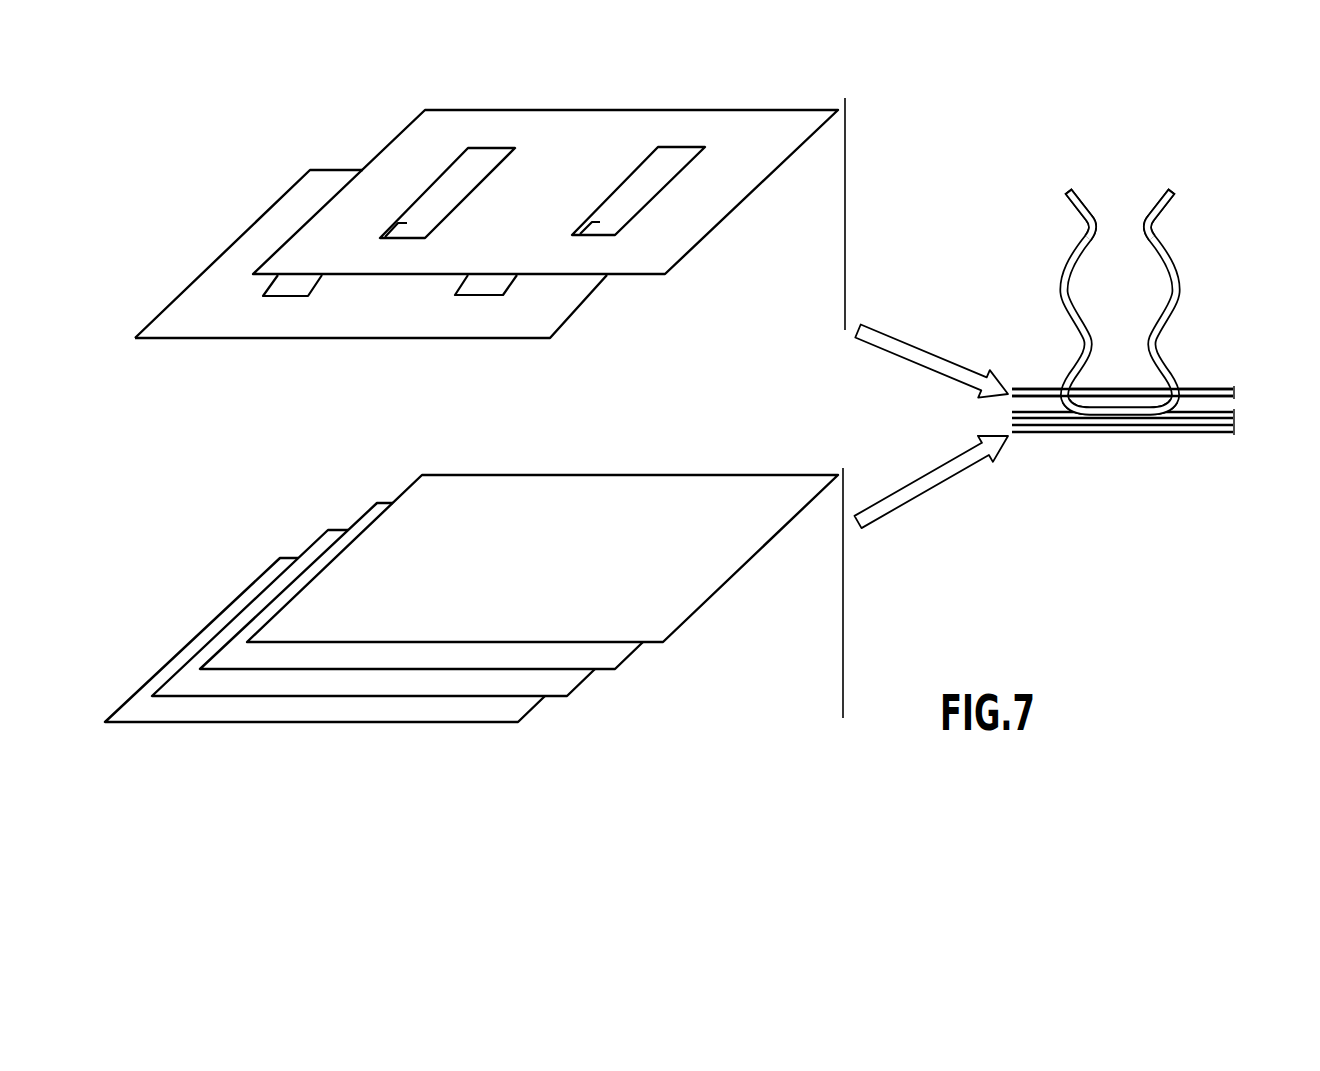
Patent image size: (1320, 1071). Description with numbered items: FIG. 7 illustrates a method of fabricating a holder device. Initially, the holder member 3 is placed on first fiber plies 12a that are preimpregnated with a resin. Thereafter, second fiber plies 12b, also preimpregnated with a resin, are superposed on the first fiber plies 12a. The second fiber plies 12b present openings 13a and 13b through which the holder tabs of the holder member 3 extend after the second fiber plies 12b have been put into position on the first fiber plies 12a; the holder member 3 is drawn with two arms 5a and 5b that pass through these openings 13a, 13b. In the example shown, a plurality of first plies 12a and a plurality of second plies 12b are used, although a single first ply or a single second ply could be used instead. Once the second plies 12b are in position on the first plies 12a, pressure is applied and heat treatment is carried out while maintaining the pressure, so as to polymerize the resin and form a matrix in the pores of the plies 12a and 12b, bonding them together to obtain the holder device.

The holder member 3 is at (1056, 181).
The clip arm 5a is at (1070, 207).
The clip arm 5b is at (1167, 207).
The first fiber plies 12a is at (845, 598).
The second fiber plies 12b is at (847, 213).
The opening 13a is at (404, 229).
The opening 13b is at (595, 227).